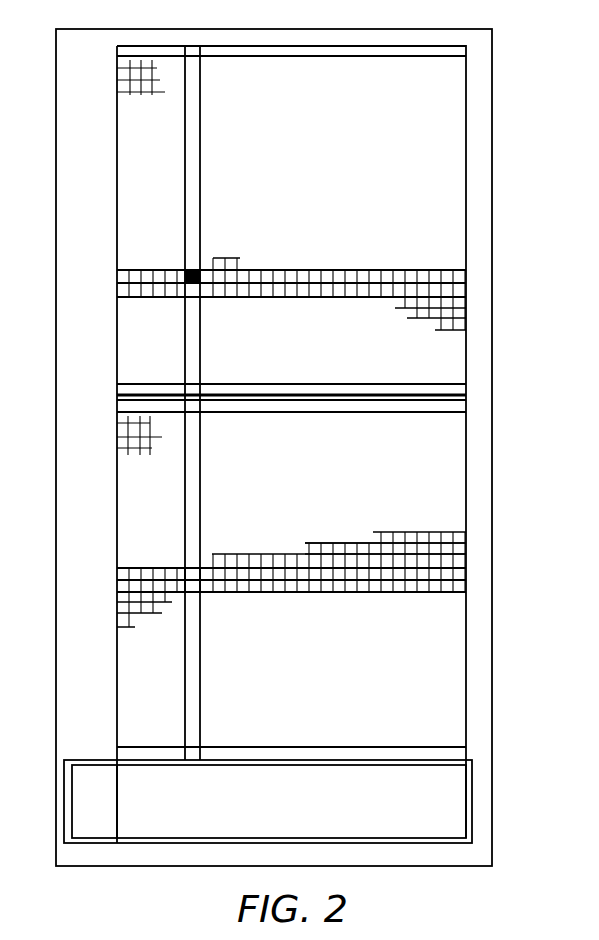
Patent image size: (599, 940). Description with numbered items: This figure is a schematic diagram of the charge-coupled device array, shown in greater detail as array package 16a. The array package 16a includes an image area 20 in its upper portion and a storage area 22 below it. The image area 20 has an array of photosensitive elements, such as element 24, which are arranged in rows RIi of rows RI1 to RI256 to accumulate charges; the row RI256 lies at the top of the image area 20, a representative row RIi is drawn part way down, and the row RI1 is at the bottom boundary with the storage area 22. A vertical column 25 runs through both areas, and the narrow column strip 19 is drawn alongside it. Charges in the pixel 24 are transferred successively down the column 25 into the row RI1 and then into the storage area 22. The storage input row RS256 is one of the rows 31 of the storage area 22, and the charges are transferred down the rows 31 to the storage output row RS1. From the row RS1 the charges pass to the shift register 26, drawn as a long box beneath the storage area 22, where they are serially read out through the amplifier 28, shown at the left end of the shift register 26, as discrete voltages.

The array package 16a is at (493, 480).
The column 19 is at (198, 338).
The image area 20 is at (451, 340).
The storage area 22 is at (449, 652).
The photosensitive element 24 is at (197, 270).
The column 25 is at (193, 568).
The shift register 26 is at (450, 806).
The amplifier 28 is at (80, 765).
The rows of storage area 31 is at (348, 550).
The row RI256 is at (462, 53).
The row RIi is at (462, 276).
The row RI1 is at (462, 388).
The storage input row RS256 is at (458, 404).
The storage output row RS1 is at (456, 753).